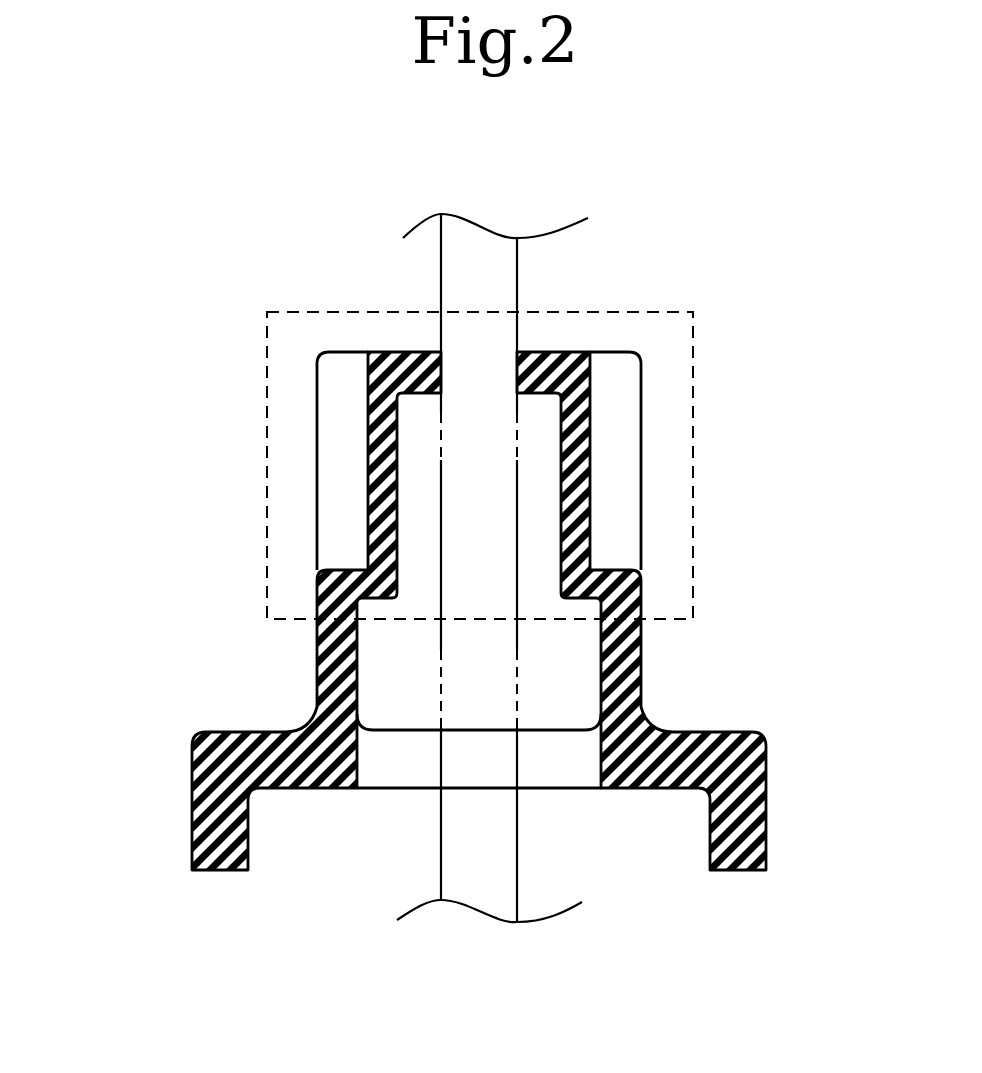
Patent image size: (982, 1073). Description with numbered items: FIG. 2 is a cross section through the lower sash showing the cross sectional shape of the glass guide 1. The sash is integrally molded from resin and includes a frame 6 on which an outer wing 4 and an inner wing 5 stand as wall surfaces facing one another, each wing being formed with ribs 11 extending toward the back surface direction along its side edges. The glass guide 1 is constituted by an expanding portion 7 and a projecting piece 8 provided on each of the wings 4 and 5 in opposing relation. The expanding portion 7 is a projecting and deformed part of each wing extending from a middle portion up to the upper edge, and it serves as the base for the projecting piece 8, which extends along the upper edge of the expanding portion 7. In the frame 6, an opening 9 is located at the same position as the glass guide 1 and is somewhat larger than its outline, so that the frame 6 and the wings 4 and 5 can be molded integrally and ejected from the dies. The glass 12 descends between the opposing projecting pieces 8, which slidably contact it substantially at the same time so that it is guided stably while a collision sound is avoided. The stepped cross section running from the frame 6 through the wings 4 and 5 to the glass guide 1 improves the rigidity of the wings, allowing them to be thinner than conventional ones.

The glass guide 1 is at (705, 343).
The outer wing 4 is at (642, 658).
The inner wing 5 is at (317, 663).
The frame 6 is at (653, 777).
The expanding portion 7 is at (340, 457).
The projecting piece 8 is at (533, 350).
The opening 9 is at (410, 762).
The rib 11 is at (218, 848).
The glass 12 is at (455, 875).